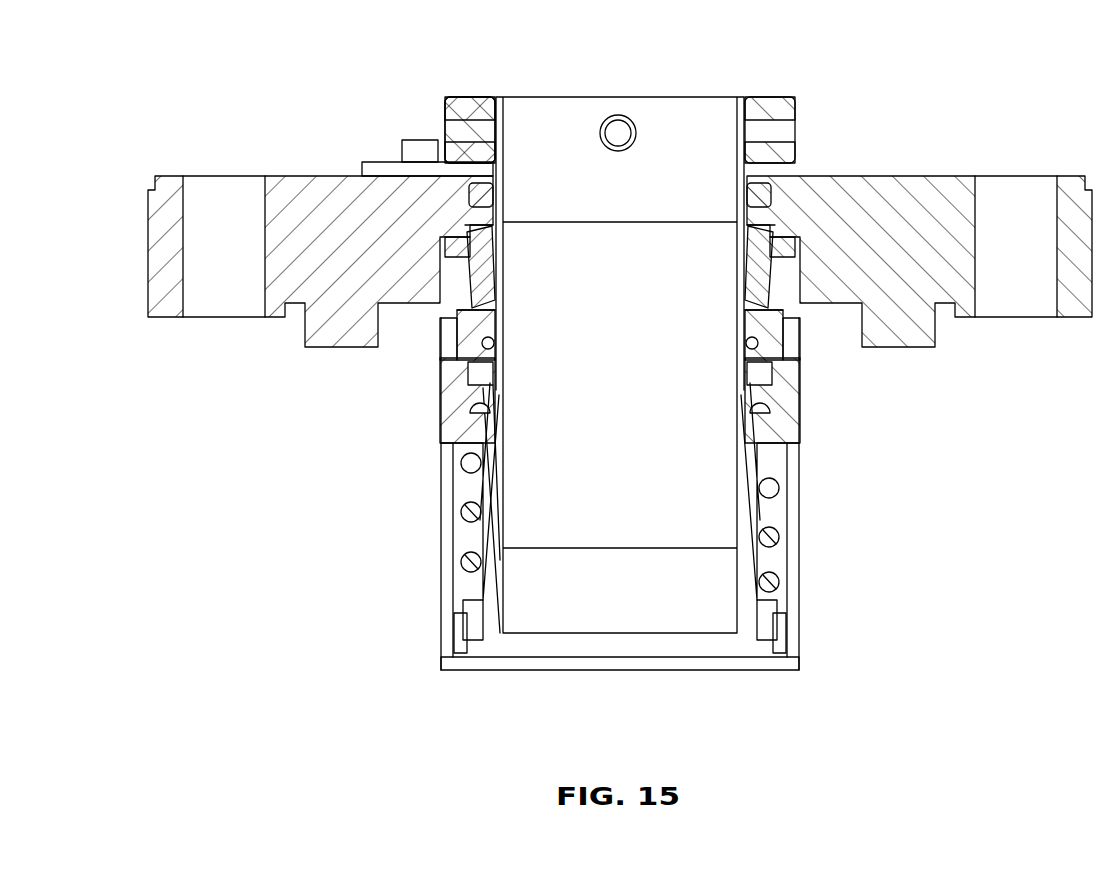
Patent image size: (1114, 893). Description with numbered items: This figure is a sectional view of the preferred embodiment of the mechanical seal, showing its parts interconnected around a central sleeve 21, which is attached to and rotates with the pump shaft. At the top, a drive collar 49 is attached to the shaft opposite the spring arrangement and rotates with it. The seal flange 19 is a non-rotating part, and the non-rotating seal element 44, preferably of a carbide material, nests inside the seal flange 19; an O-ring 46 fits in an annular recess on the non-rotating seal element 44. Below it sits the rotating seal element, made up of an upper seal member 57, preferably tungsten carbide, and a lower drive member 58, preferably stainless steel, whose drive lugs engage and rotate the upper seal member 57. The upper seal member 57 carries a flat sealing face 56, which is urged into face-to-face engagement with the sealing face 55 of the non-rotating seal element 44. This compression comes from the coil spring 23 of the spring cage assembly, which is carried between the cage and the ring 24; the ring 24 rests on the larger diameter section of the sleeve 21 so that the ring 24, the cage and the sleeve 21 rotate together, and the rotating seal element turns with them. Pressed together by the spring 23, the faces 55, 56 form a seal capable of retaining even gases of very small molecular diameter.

The seal flange 19 is at (934, 176).
The sleeve 21 is at (500, 152).
The coil spring 23 is at (464, 513).
The ring 24 is at (785, 610).
The non-rotating seal element 44 is at (483, 263).
The O-ring 46 is at (786, 243).
The drive collar 49 is at (777, 95).
The sealing face 55 is at (763, 312).
The sealing face 56 is at (768, 314).
The upper seal member 57 is at (490, 320).
The lower drive member 58 is at (447, 393).